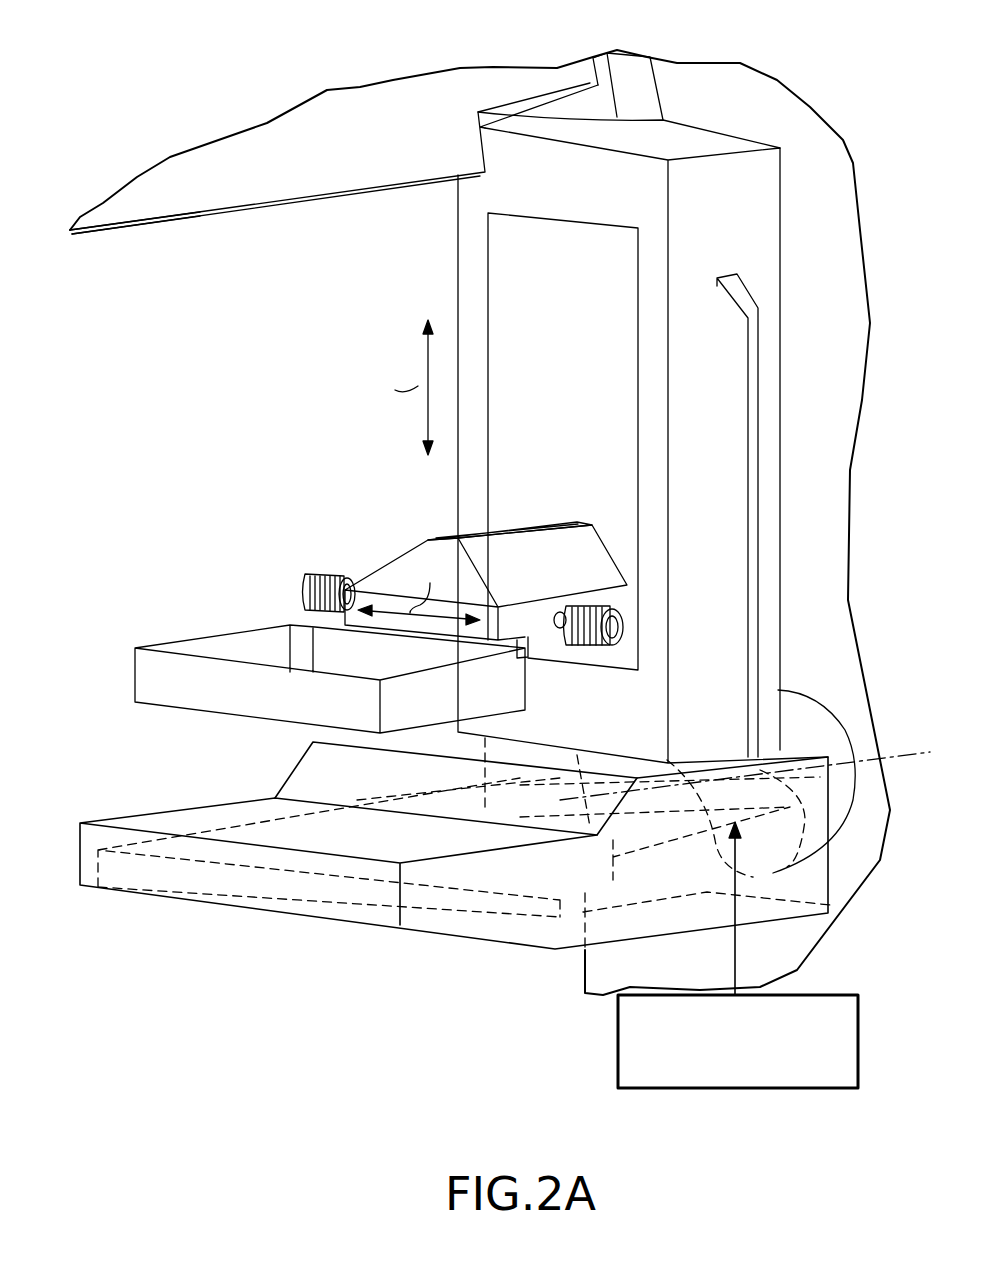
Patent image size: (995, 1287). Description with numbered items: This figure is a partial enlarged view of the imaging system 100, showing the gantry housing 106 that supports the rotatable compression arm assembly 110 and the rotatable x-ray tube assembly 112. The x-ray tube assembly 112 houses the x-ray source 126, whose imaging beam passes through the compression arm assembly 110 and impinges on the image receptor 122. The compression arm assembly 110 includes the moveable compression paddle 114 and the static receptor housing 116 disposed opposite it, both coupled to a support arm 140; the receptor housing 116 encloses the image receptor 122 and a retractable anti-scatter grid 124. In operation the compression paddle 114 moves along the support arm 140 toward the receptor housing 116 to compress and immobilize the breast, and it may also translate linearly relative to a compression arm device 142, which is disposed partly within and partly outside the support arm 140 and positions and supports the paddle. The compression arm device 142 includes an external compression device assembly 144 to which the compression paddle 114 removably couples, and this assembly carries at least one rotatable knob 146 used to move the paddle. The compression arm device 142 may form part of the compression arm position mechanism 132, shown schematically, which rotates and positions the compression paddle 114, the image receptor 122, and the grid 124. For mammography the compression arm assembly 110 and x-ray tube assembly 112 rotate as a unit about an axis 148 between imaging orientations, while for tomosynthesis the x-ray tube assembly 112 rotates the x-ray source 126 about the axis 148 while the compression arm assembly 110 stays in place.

The imaging system 100 is at (488, 510).
The housing 106 is at (813, 167).
The compression arm assembly 110 is at (473, 257).
The x-ray tube assembly 112 is at (255, 185).
The x-ray source 126 is at (149, 242).
The compression paddle 114 is at (197, 637).
The receptor housing 116 is at (493, 927).
The image receptor 122 is at (248, 875).
The retractable anti-scatter grid 124 is at (373, 798).
The compression arm position mechanism 132 is at (618, 1037).
The support arm 140 is at (705, 522).
The compression arm device 142 is at (451, 571).
The external compression device assembly 144 is at (440, 537).
The rotatable knob 146 is at (320, 578).
The axis 148 is at (910, 760).